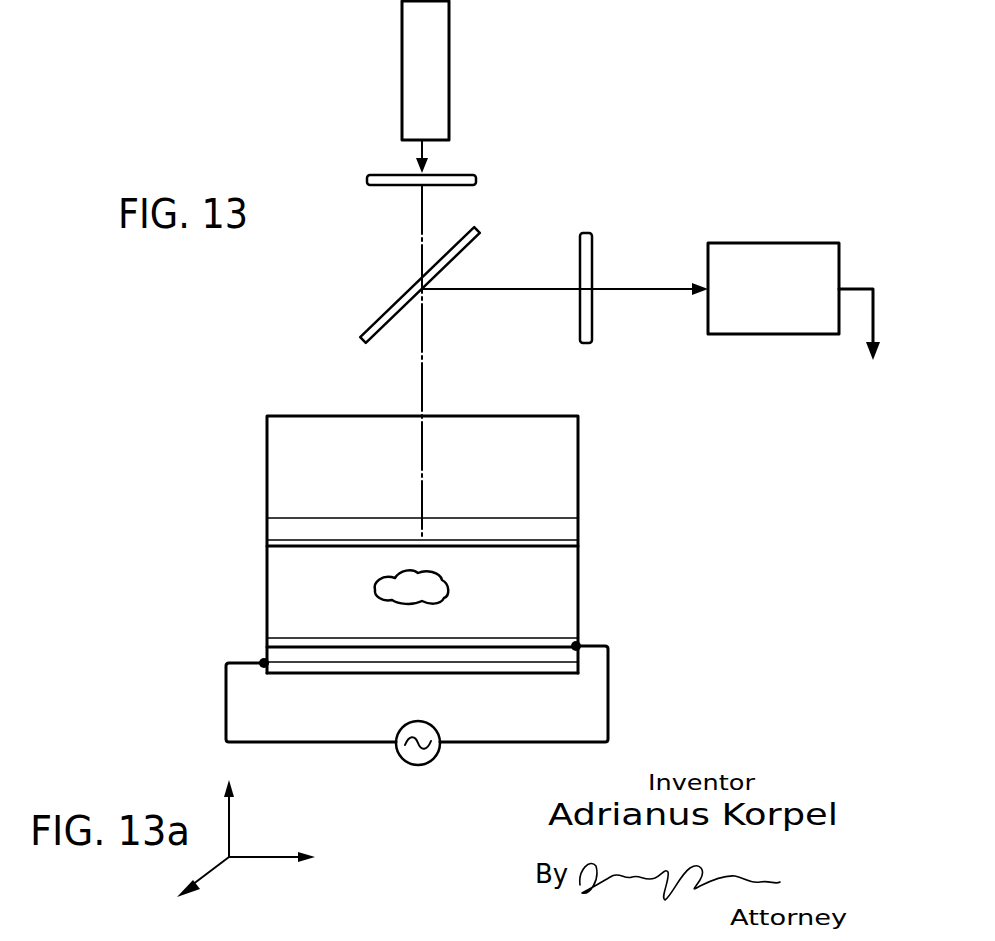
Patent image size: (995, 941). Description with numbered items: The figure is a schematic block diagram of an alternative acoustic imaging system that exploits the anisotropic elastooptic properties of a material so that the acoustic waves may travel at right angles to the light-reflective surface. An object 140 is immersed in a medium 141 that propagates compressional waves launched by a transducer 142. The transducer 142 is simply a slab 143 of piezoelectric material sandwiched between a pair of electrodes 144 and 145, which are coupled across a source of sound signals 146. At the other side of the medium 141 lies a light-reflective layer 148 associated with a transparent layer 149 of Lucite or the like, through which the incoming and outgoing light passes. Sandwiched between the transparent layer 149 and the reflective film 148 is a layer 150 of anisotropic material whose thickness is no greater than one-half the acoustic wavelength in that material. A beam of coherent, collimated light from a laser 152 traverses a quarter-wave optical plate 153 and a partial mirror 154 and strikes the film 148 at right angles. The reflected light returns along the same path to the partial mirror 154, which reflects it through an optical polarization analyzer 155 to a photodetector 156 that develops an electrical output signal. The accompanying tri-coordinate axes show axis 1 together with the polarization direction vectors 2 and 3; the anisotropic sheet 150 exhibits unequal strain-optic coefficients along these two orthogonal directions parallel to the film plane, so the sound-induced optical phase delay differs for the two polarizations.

In FIG. 13, the object 140 is at (446, 587).
In FIG. 13, the medium 141 is at (558, 585).
In FIG. 13, the transducer 142 is at (343, 680).
In FIG. 13, the slab of piezoelectric material 143 is at (262, 660).
In FIG. 13, the electrode 144 is at (548, 641).
In FIG. 13, the electrode 145 is at (512, 668).
In FIG. 13, the source of sound signals 146 is at (438, 726).
In FIG. 13, the light-reflective layer 148 is at (570, 548).
In FIG. 13, the layer of Lucite 149 is at (565, 450).
In FIG. 13, the layer of anisotropic material 150 is at (568, 528).
In FIG. 13, the laser 152 is at (449, 35).
In FIG. 13, the quarter-wave optical plate 153 is at (465, 178).
In FIG. 13, the partial mirror 154 is at (378, 326).
In FIG. 13, the optical polarization analyzer 155 is at (586, 253).
In FIG. 13, the photodetector 156 is at (778, 243).
In FIG. 13a, the coordinate axis 1 is at (229, 808).
In FIG. 13a, the polarization direction vector 2 is at (193, 887).
In FIG. 13a, the polarization direction vector 3 is at (279, 859).